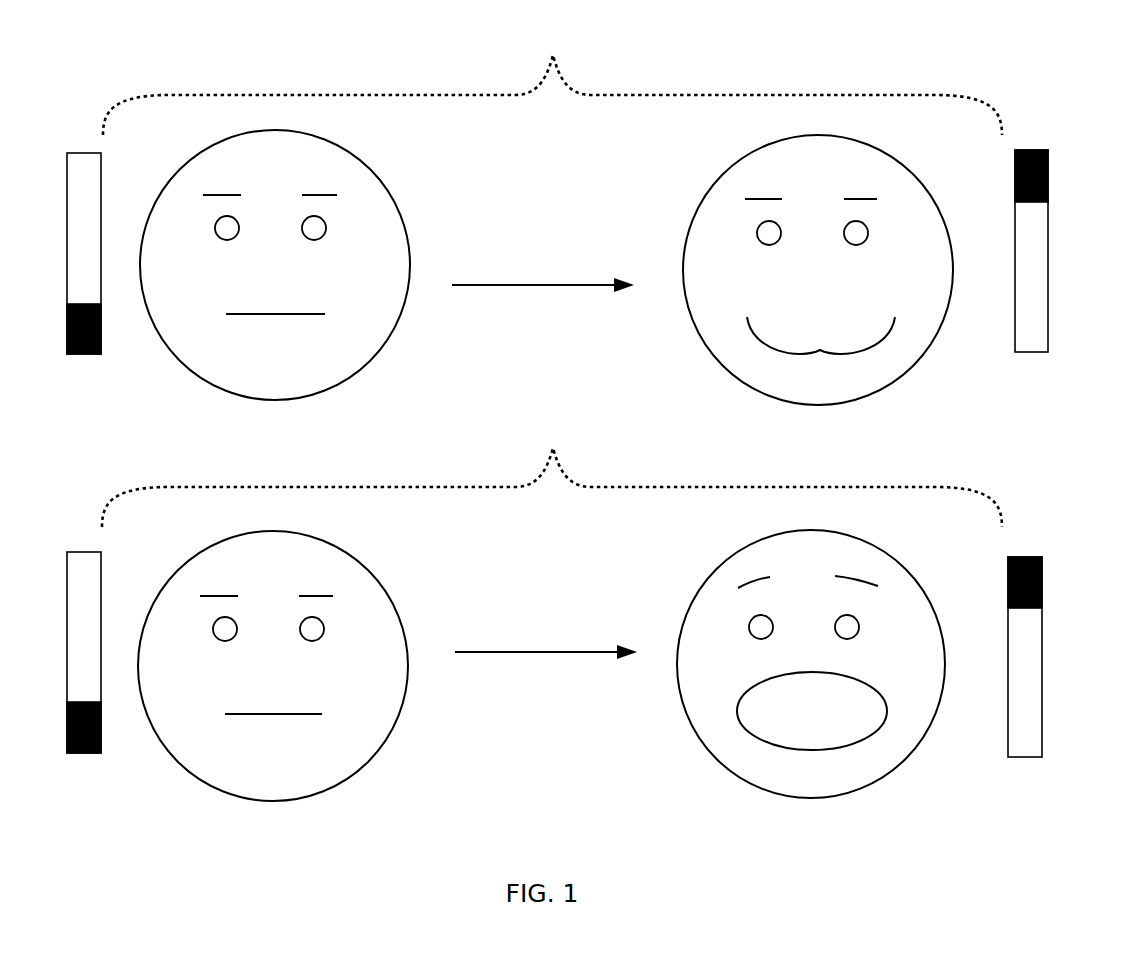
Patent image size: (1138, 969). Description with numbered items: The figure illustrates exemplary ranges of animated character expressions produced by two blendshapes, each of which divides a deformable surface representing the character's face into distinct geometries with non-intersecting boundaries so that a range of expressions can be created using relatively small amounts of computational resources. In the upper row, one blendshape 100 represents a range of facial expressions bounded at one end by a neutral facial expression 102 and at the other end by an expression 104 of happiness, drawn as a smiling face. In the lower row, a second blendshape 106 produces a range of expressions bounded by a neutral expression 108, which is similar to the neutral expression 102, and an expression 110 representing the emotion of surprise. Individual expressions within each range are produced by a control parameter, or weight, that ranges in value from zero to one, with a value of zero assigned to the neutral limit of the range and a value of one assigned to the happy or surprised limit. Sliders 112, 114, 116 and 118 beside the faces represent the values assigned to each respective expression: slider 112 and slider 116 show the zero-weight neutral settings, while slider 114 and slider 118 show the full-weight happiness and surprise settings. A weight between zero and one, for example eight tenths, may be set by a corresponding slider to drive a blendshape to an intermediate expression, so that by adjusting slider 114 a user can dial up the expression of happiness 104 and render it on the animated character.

The blendshape 100 is at (552, 80).
The neutral facial expression 102 is at (388, 187).
The expression of happiness 104 is at (930, 200).
The second blendshape 106 is at (552, 469).
The neutral expression 108 is at (382, 587).
The expression of surprise 110 is at (908, 573).
The slider 112 is at (101, 400).
The slider 114 is at (1013, 402).
The slider 116 is at (99, 800).
The slider 118 is at (1000, 814).